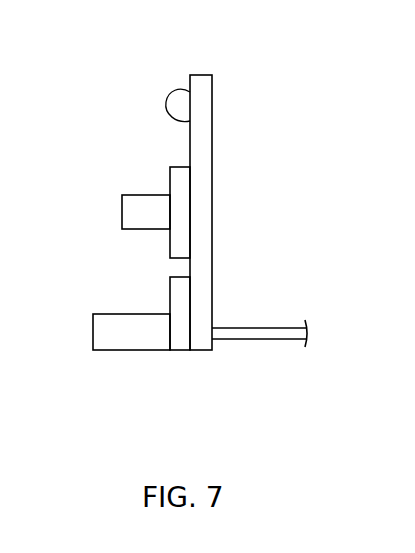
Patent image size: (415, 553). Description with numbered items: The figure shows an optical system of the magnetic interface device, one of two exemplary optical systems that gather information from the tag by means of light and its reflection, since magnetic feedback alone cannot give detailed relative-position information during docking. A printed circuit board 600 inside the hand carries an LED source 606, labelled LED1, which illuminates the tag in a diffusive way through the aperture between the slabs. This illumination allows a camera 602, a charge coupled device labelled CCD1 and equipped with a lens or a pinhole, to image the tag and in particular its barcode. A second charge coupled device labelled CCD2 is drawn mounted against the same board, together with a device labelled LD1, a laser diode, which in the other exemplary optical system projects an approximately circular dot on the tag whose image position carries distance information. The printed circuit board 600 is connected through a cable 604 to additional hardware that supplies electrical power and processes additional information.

The printed circuit board 600 is at (193, 75).
The camera 602 is at (136, 204).
The cable 604 is at (273, 340).
The LED source 606 is at (165, 106).
The LED LED1 is at (183, 100).
The charge coupled device CCD1 is at (182, 205).
The second CCD sensor CCD2 is at (183, 312).
The laser diode LD1 is at (124, 337).